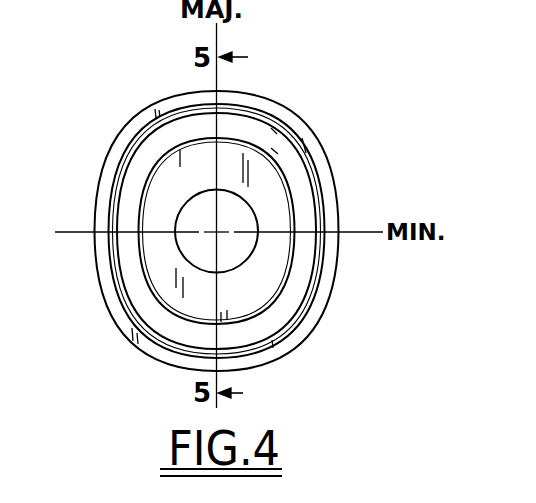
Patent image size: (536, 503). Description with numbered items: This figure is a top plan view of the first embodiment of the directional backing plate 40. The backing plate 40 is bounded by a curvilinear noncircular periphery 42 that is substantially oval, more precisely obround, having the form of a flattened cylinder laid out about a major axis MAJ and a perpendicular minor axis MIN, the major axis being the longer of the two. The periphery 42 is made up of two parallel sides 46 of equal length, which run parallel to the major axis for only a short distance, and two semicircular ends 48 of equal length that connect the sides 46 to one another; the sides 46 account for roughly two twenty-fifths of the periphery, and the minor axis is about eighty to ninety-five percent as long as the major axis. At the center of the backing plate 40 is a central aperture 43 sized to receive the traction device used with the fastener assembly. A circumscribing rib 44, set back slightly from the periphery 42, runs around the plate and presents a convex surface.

The backing plate 40 is at (82, 148).
The periphery 42 is at (313, 117).
The central aperture 43 is at (243, 252).
The circumscribing rib 44 is at (132, 270).
The parallel sides 46 is at (96, 208).
The semicircular ends 48 is at (129, 130).